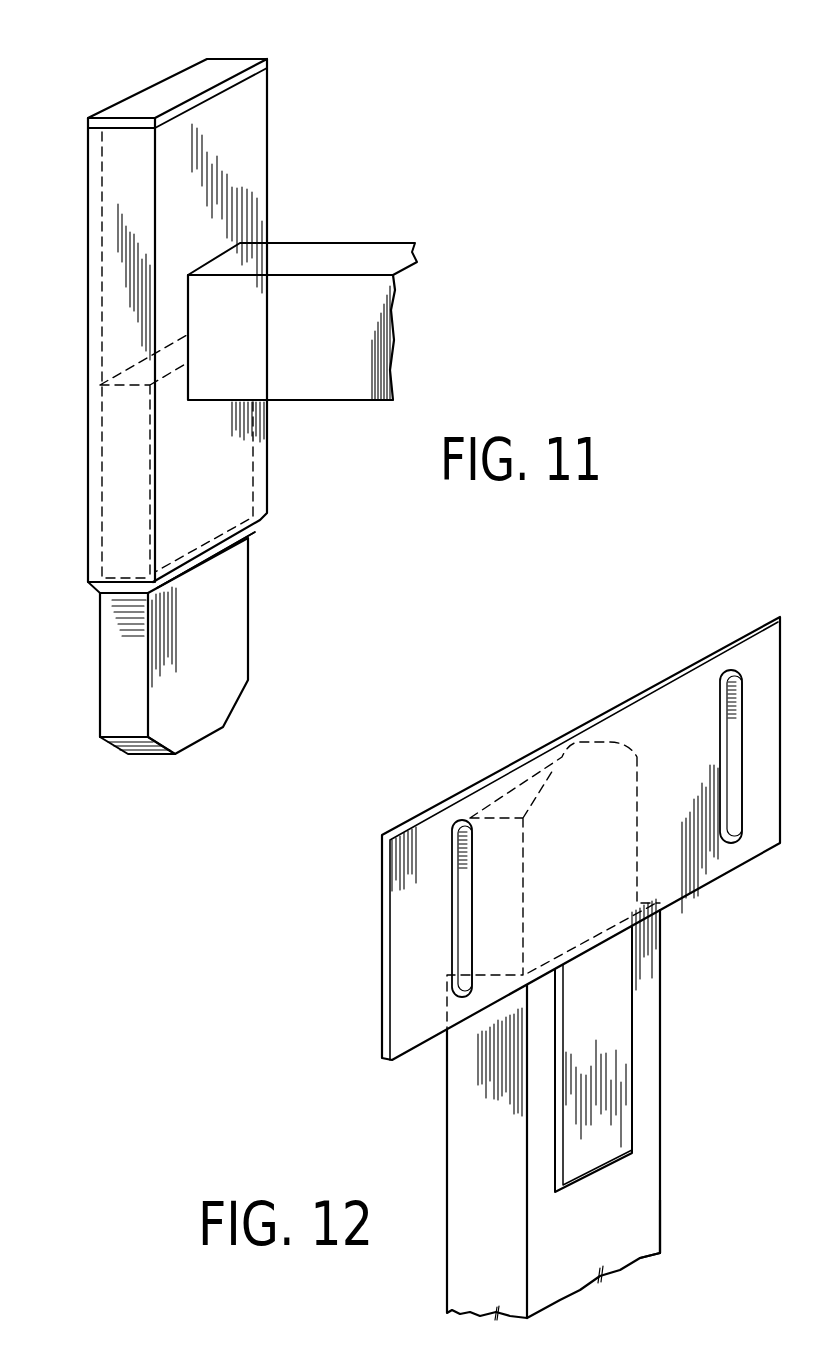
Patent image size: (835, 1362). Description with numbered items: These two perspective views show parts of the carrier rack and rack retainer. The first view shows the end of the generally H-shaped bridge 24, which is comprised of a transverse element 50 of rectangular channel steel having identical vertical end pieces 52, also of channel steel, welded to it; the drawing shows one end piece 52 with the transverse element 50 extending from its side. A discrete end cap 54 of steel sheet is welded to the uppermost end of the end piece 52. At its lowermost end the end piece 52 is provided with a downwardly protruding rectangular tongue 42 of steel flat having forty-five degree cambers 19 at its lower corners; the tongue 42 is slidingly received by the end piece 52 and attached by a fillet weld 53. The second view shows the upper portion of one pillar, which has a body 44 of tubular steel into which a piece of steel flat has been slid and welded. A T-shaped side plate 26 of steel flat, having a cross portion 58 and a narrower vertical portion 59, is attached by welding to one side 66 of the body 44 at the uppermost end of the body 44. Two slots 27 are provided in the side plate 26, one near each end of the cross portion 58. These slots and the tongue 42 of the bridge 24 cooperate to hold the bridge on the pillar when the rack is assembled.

In FIG. 11, the 45 degree cambers 19 is at (143, 754).
In FIG. 11, the bridge 24 is at (233, 413).
In FIG. 12, the side plate 26 is at (589, 821).
In FIG. 12, the slots 27 is at (455, 835).
In FIG. 11, the tongue 42 is at (210, 613).
In FIG. 12, the body 44 is at (602, 1109).
In FIG. 11, the transverse element 50 is at (327, 300).
In FIG. 11, the end piece 52 is at (240, 154).
In FIG. 11, the fillet weld 53 is at (253, 530).
In FIG. 11, the end cap 54 is at (232, 62).
In FIG. 12, the cross portion 58 is at (693, 862).
In FIG. 12, the vertical portion 59 is at (602, 1052).
In FIG. 12, the side 66 is at (642, 1218).